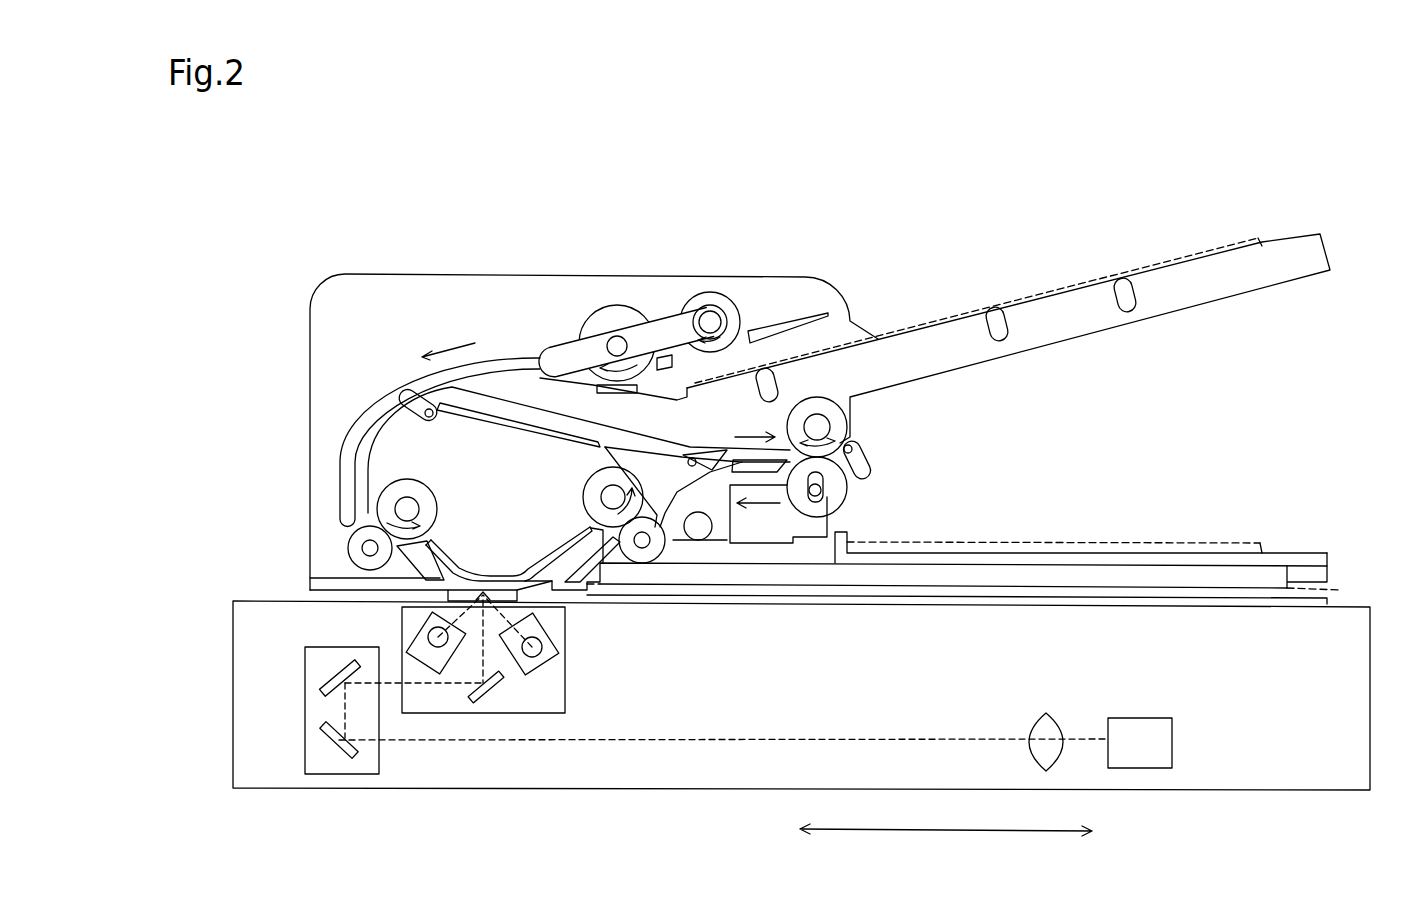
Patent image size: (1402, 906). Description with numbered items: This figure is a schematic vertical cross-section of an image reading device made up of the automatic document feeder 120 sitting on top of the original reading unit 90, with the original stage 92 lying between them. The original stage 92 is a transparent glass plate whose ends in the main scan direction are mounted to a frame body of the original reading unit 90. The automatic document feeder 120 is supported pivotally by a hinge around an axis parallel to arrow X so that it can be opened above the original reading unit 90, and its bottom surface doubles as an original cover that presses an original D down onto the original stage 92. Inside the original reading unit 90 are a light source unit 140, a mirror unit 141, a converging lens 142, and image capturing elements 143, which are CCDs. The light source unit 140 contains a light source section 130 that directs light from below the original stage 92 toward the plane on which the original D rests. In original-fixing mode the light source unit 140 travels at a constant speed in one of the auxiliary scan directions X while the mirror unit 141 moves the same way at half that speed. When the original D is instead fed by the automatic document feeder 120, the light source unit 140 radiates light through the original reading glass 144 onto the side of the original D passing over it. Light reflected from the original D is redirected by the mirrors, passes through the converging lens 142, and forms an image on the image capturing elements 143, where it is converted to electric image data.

The automatic document feeder 120 is at (356, 226).
The original reading unit 90 is at (225, 695).
The original stage 92 is at (1252, 600).
The light source section 130 is at (427, 631).
The light source unit 140 is at (576, 671).
The mirror unit 141 is at (294, 707).
The converging lens 142 is at (1042, 713).
The image capturing elements 143 is at (1136, 718).
The original reading glass 144 is at (466, 595).
The original D is at (1340, 590).
The auxiliary scan direction X is at (947, 830).